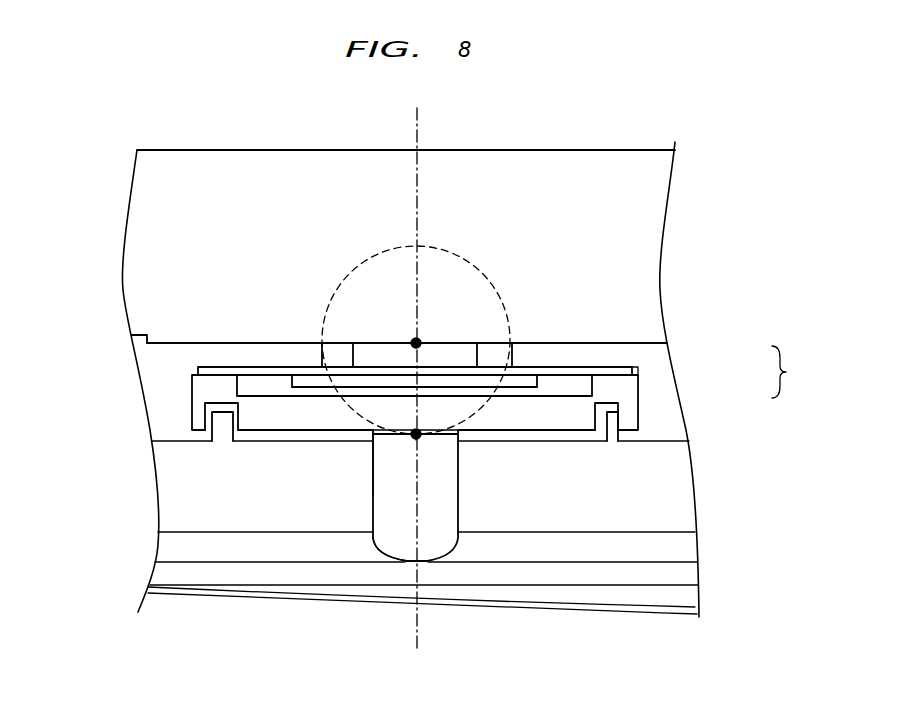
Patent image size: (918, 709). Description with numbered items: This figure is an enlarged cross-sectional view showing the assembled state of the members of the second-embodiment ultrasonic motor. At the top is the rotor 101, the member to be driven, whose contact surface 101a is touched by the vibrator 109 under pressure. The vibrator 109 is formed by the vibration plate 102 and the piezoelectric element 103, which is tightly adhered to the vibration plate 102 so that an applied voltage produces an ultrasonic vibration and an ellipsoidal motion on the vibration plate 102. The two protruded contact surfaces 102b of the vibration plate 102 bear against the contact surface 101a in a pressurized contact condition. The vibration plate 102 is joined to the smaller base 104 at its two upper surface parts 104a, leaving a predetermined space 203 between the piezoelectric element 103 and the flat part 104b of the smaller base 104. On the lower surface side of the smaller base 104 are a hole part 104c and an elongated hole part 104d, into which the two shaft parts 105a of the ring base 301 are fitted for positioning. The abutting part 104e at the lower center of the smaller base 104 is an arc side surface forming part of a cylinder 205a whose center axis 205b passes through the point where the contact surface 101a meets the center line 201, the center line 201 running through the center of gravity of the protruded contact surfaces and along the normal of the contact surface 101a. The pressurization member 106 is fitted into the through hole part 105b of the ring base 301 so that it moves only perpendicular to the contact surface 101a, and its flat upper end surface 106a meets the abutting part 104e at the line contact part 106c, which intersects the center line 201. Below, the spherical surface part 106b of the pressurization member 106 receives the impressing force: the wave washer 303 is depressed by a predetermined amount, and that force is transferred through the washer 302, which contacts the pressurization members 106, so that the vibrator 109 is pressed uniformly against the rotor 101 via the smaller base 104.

The rotor 101 is at (205, 162).
The contact surface 101a is at (180, 343).
The vibration plate 102 is at (483, 338).
The protruded contact surfaces 102b is at (320, 352).
The piezoelectric element 103 is at (560, 388).
The smaller base 104 is at (417, 476).
The upper surface parts 104a is at (217, 373).
The flat part 104b is at (633, 367).
The hole part 104c is at (605, 406).
The elongated hole part 104d is at (198, 407).
The abutting part 104e is at (420, 437).
The shaft parts 105a is at (225, 432).
The through hole part 105b is at (373, 495).
The pressurization member 106 is at (452, 565).
The upper end surface 106a is at (455, 430).
The spherical surface part 106b is at (387, 548).
The line contact part 106c is at (416, 434).
The vibrator 109 is at (799, 372).
The center line 201 is at (418, 122).
The predetermined space 203 is at (313, 394).
The cylinder 205a is at (367, 257).
The center axis 205b is at (386, 295).
The ring base 301 is at (677, 482).
The washer 302 is at (572, 580).
The wave washer 303 is at (650, 612).